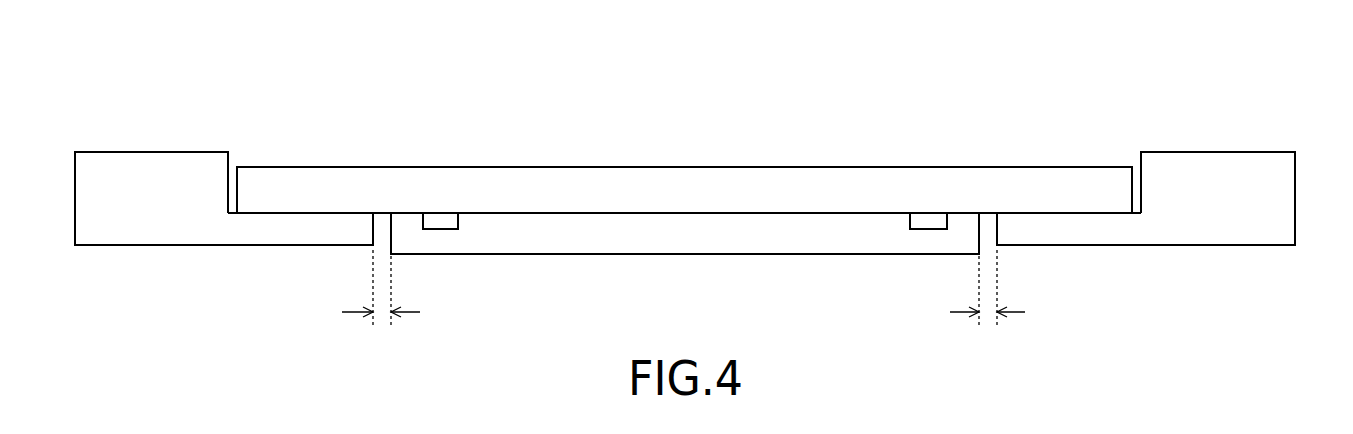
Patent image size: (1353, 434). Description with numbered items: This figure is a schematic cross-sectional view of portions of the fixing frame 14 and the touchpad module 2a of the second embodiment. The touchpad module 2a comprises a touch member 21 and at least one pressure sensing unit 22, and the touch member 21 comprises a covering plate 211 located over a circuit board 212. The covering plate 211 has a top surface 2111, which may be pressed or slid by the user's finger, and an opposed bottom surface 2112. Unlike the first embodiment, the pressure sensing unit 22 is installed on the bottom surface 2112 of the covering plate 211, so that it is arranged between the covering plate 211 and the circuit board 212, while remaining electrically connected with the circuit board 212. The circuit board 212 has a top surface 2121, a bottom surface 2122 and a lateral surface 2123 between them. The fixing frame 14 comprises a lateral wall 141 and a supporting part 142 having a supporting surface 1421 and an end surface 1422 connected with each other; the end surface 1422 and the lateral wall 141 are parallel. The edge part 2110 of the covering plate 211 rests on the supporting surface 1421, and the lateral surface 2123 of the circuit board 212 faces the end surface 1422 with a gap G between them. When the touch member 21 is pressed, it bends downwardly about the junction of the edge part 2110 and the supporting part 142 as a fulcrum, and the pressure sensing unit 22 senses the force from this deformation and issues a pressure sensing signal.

The touchpad module 2a is at (885, 113).
The touch member 21 is at (255, 40).
The covering plate 211 is at (320, 18).
The edge part 2110 is at (263, 182).
The top surface 2111 is at (627, 167).
The circuit board 212 is at (803, 273).
The top surface 2121 is at (651, 113).
The bottom surface 2122 is at (651, 155).
The lateral surface 2123 is at (391, 230).
The bottom surface 2112 is at (697, 215).
The pressure sensing unit 22 is at (445, 222).
The fixing frame 14 is at (118, 135).
The lateral wall 141 is at (1197, 135).
The supporting part 142 is at (535, 40).
The supporting surface 1421 is at (1033, 212).
The end surface 1422 is at (1035, 262).
The gap G is at (683, 302).